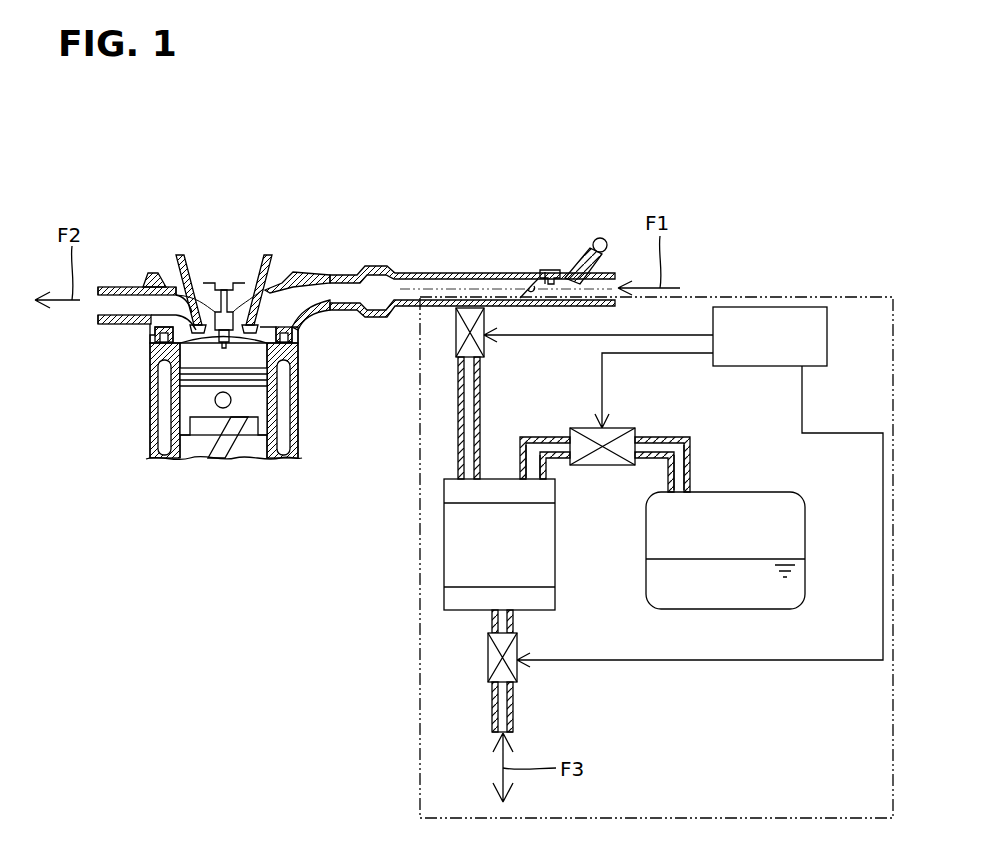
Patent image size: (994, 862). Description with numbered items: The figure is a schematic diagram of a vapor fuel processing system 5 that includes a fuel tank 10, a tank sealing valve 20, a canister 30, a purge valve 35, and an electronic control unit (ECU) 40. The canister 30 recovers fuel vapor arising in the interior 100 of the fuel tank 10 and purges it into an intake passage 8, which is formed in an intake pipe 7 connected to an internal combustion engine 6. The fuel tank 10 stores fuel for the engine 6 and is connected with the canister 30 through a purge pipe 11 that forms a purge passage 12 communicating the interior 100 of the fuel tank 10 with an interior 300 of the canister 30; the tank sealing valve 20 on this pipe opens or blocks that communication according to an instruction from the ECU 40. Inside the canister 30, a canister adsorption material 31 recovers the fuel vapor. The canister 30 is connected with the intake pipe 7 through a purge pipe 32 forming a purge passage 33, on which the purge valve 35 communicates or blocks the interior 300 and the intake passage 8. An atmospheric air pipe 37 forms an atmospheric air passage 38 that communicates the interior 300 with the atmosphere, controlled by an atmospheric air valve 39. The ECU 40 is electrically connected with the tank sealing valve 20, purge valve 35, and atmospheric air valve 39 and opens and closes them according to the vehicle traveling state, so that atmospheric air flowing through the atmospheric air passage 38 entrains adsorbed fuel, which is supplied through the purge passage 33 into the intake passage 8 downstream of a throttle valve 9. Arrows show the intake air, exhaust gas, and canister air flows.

The vapor fuel processing system 5 is at (836, 286).
The internal combustion engine 6 is at (150, 420).
The intake pipe 7 is at (470, 274).
The intake passage 8 is at (425, 290).
The throttle valve 9 is at (535, 283).
The fuel tank 10 is at (807, 537).
The purge pipe 11 is at (648, 437).
The purge passage 12 is at (676, 440).
The tank sealing valve 20 is at (612, 465).
The canister 30 is at (444, 522).
The interior of the canister 300 is at (462, 490).
The canister adsorption material 31 is at (528, 566).
The purge pipe 32 is at (480, 423).
The purge passage 33 is at (470, 396).
The purge valve 35 is at (456, 345).
The atmospheric air pipe 37 is at (507, 626).
The atmospheric air passage 38 is at (505, 717).
The atmospheric air valve 39 is at (488, 662).
The electronic control unit (ECU) 40 is at (827, 332).
The interior of the fuel tank 100 is at (787, 505).